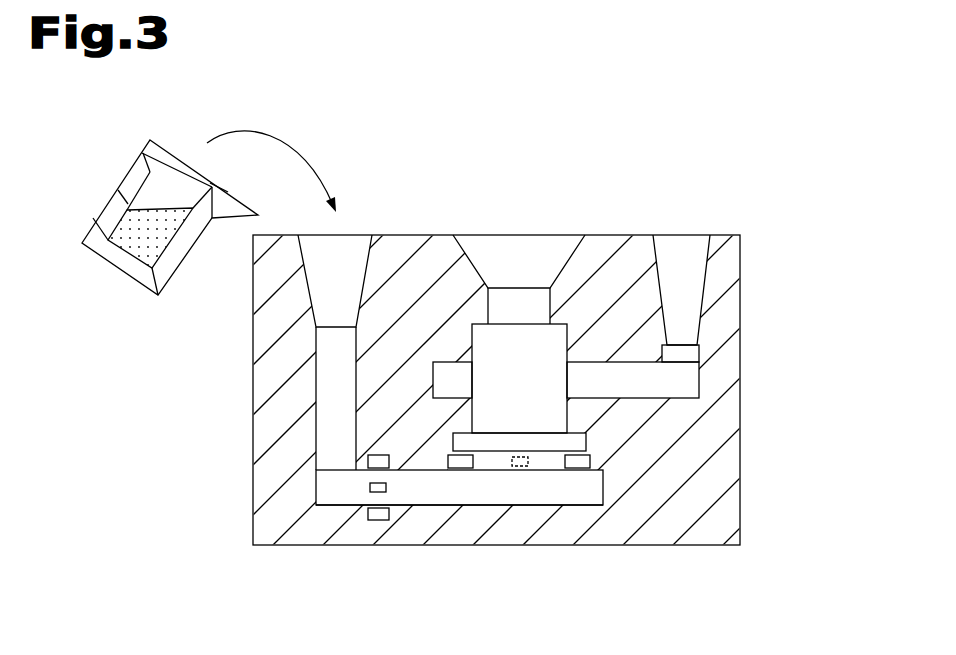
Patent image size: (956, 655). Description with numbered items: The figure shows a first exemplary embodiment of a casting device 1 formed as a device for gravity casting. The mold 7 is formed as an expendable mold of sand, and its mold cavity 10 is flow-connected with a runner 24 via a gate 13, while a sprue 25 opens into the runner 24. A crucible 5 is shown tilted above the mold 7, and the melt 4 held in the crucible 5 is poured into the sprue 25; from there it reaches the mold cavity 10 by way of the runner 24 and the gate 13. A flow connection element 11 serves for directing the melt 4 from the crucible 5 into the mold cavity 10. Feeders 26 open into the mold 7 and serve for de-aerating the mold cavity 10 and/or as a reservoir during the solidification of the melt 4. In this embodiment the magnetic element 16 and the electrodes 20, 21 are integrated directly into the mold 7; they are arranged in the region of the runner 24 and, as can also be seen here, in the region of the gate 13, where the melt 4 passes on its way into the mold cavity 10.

The casting device 1 is at (768, 80).
The melt 4 is at (157, 217).
The crucible 5 is at (137, 175).
The mold 7 is at (733, 319).
The mold cavity 10 is at (491, 356).
The flow connection element 11 is at (548, 524).
The gate 13 is at (540, 455).
The magnetic element 16 is at (590, 458).
The electrode 20 is at (368, 492).
The electrode 21 is at (528, 466).
The runner 24 is at (488, 497).
The sprue 25 is at (351, 248).
The feeders 26 is at (530, 255).